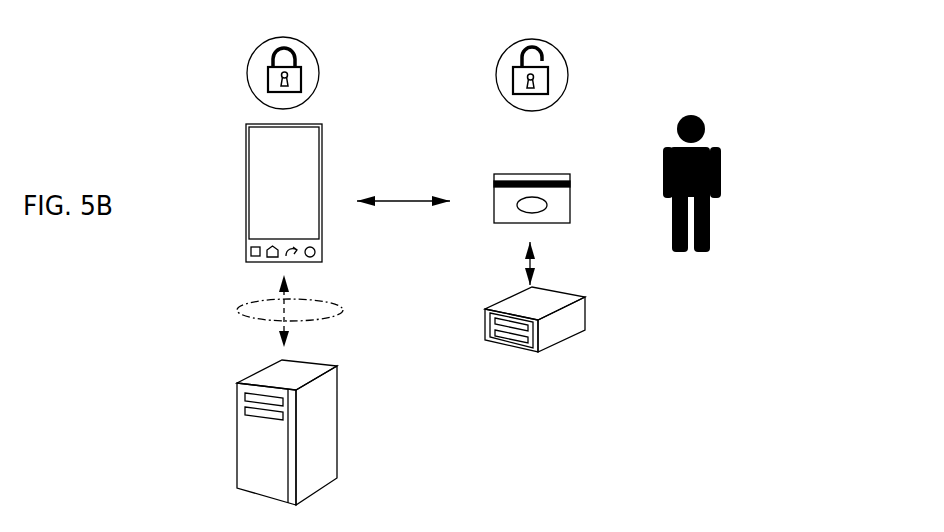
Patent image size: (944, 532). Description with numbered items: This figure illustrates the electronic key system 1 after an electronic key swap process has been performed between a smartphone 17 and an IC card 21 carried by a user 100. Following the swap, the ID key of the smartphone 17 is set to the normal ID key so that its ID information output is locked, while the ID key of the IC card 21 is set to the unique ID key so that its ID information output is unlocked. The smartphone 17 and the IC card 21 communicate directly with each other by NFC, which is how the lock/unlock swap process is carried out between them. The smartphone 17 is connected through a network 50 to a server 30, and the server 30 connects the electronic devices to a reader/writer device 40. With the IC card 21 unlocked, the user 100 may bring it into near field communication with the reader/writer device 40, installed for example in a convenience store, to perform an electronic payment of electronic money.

The electronic key system 1 is at (764, 51).
The smartphone 17 is at (322, 172).
The IC card 21 is at (570, 190).
The server 30 is at (298, 362).
The reader/writer device 40 is at (585, 310).
The network 50 is at (230, 312).
The user 100 is at (721, 158).